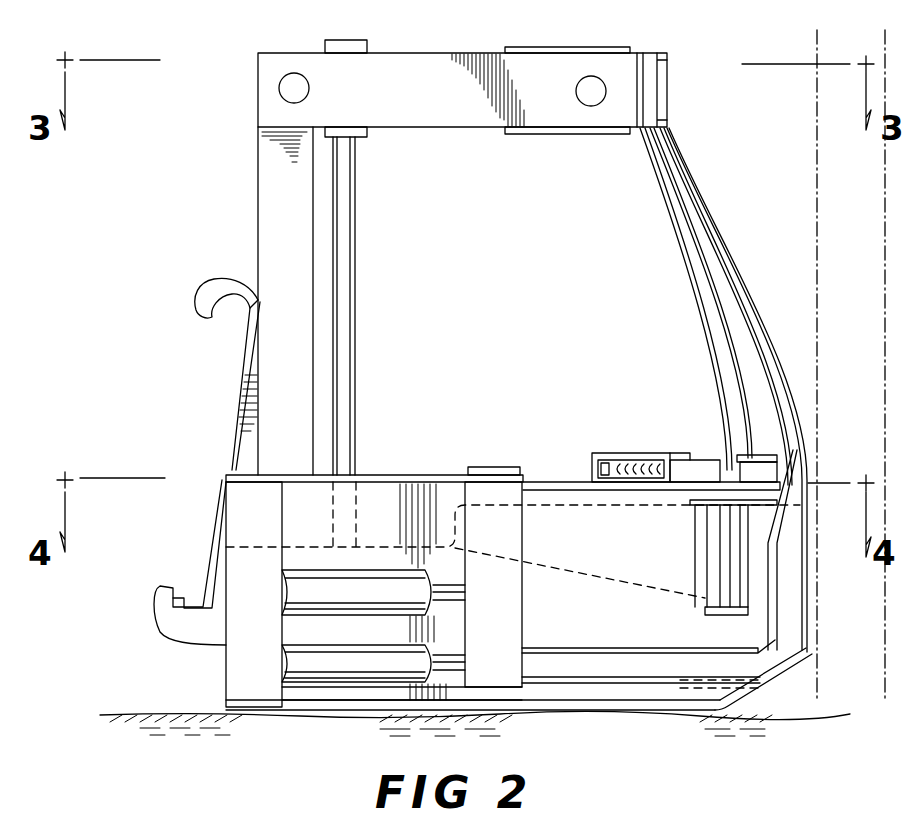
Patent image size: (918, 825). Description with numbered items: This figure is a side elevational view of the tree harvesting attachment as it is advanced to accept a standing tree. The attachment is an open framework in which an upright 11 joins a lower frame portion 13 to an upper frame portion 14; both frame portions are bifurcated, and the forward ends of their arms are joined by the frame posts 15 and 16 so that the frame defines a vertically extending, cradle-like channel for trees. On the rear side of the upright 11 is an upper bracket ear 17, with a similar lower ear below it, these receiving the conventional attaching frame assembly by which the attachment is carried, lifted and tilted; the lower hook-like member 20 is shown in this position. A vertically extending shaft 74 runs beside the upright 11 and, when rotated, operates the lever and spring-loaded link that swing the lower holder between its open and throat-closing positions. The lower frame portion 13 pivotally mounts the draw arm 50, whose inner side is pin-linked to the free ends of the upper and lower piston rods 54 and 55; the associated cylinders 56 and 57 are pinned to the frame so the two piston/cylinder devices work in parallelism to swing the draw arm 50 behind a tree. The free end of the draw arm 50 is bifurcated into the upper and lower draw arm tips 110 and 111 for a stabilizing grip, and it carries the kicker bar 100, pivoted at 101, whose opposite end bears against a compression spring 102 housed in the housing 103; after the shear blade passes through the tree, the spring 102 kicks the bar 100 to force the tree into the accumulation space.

The upright 11 is at (268, 190).
The lower frame portion 13 is at (545, 468).
The upper frame portion 14 is at (455, 49).
The frame post 15 is at (735, 272).
The frame post 16 is at (705, 335).
The upper bracket ear 17 is at (258, 232).
The lower hook 20 is at (192, 630).
The draw arm 50 is at (604, 611).
The upper piston rod 54 is at (458, 592).
The lower piston rod 55 is at (458, 660).
The cylinder 56 is at (372, 596).
The cylinder 57 is at (372, 667).
The vertically extending shaft 74 is at (348, 285).
The kicker bar 100 is at (703, 478).
The pivot of kicker bar 101 is at (752, 455).
The compression spring 102 is at (660, 455).
The housing 103 is at (610, 455).
The upper draw arm tip 110 is at (705, 503).
The lower draw arm tip 111 is at (748, 644).